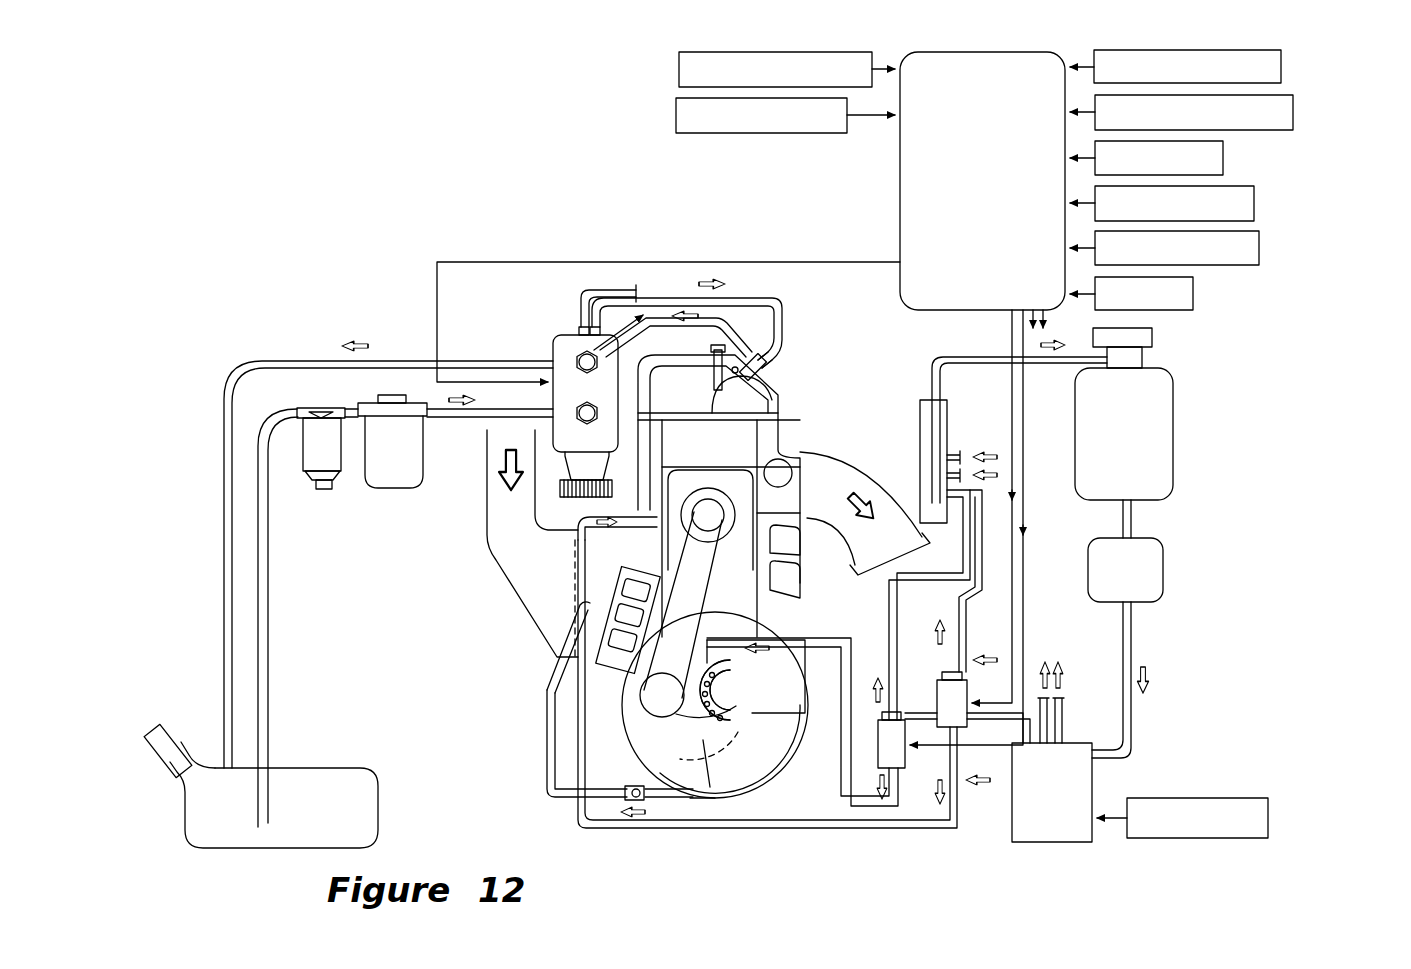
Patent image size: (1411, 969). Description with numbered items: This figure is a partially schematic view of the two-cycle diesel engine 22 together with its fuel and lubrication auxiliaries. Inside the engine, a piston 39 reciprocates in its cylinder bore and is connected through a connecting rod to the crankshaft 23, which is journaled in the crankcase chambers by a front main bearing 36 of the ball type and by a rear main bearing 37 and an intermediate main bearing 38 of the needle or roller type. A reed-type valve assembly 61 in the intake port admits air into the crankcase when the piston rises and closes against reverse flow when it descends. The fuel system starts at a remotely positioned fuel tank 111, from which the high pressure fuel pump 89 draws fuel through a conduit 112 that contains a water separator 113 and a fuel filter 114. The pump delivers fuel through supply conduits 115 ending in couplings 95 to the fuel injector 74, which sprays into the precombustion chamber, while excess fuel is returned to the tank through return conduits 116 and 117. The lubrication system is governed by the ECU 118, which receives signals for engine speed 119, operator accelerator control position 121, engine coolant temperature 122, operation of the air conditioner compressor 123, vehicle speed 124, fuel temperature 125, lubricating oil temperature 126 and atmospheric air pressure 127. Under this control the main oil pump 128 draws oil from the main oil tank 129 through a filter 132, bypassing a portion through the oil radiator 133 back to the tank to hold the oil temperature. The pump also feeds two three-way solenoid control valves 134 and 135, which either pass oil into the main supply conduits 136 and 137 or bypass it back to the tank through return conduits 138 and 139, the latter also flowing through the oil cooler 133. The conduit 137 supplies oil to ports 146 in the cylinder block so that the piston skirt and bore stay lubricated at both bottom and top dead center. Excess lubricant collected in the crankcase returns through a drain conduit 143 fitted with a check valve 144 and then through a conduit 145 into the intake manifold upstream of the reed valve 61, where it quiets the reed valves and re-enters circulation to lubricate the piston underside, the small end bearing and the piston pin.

The two-cycle diesel engine 22 is at (832, 433).
The crankshaft 23 is at (762, 748).
The front main bearing 36 is at (745, 685).
The rear main bearing 37 is at (769, 690).
The intermediate main bearing 38 is at (771, 695).
The piston 39 is at (740, 463).
The reed-type valve assembly 61 is at (606, 660).
The fuel injector 74 is at (768, 372).
The high pressure fuel pump 89 is at (570, 335).
The coupling 95 is at (780, 360).
The fuel tank 111 is at (357, 768).
The conduit 112 is at (273, 630).
The water separator 113 is at (323, 490).
The fuel filter 114 is at (422, 460).
The supply conduit 115 is at (657, 291).
The return conduit 116 is at (638, 332).
The return conduit 117 is at (315, 360).
The ECU 118 is at (932, 322).
The engine speed 119 is at (679, 72).
The operator accelerator control position 121 is at (676, 113).
The engine coolant temperature 122 is at (1281, 66).
The air conditioner compressor operation 123 is at (1293, 112).
The vehicle speed 124 is at (1223, 158).
The fuel temperature 125 is at (1254, 205).
The lubricating oil temperature 126 is at (1259, 248).
The atmospheric air pressure 127 is at (1193, 295).
The main oil pump 128 is at (1092, 780).
The main oil tank 129 is at (1173, 415).
The filter 132 is at (1163, 572).
The oil radiator 133 is at (945, 432).
The three-way solenoid control valve 134 is at (862, 690).
The three-way solenoid control valve 135 is at (933, 680).
The main supply conduit 136 is at (760, 630).
The main supply conduit 137 is at (605, 830).
The return conduit 138 is at (890, 622).
The return conduit 139 is at (958, 628).
The drain conduit 143 is at (670, 800).
The check valve 144 is at (633, 787).
The conduit 145 is at (545, 758).
The port 146 is at (650, 540).